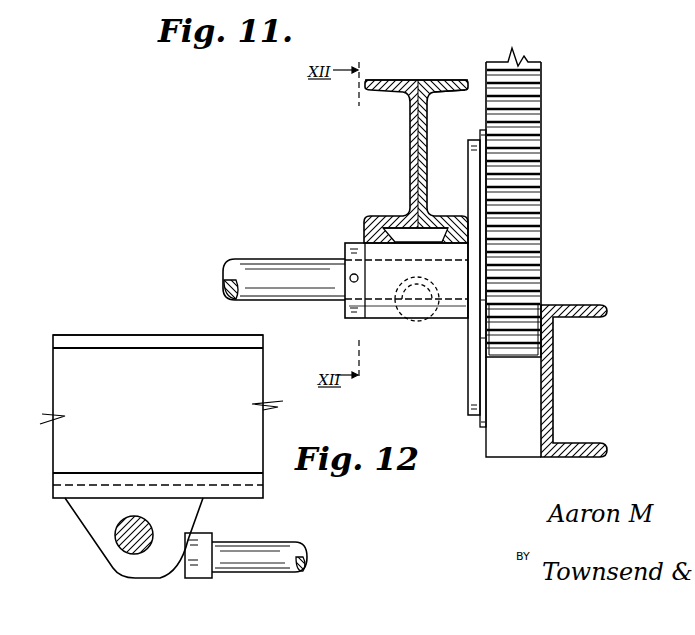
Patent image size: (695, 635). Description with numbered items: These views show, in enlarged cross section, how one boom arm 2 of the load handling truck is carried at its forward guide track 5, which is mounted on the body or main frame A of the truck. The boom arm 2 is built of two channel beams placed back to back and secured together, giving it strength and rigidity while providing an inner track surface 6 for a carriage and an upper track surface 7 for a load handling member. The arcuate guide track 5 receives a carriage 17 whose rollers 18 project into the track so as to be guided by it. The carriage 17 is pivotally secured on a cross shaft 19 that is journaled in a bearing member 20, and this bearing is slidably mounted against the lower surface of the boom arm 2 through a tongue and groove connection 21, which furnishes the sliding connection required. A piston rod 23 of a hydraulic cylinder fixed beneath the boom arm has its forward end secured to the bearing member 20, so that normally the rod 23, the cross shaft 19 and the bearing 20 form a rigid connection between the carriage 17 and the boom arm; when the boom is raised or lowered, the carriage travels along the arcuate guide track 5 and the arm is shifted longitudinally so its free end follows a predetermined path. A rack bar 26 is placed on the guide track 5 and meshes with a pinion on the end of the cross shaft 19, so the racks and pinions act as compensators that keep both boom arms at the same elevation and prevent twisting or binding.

In FIG. 11, the boom arm 2 is at (440, 80).
In FIG. 12, the boom arm 2 is at (110, 356).
In FIG. 11, the guide track 5 is at (541, 126).
In FIG. 11, the inner track surface 6 is at (410, 216).
In FIG. 12, the inner track surface 6 is at (118, 473).
In FIG. 11, the upper track surface 7 is at (398, 80).
In FIG. 12, the upper track surface 7 is at (225, 337).
In FIG. 11, the carriage 17 is at (468, 168).
In FIG. 11, the roller 18 is at (482, 132).
In FIG. 11, the cross shaft 19 is at (228, 268).
In FIG. 12, the cross shaft 19 is at (120, 548).
In FIG. 11, the bearing member 20 is at (450, 305).
In FIG. 12, the bearing member 20 is at (118, 572).
In FIG. 11, the tongue and groove connection 21 is at (372, 236).
In FIG. 11, the piston rod 23 is at (394, 322).
In FIG. 12, the piston rod 23 is at (258, 543).
In FIG. 11, the rack bar 26 is at (525, 150).
In FIG. 11, the body or main frame of truck A is at (592, 304).